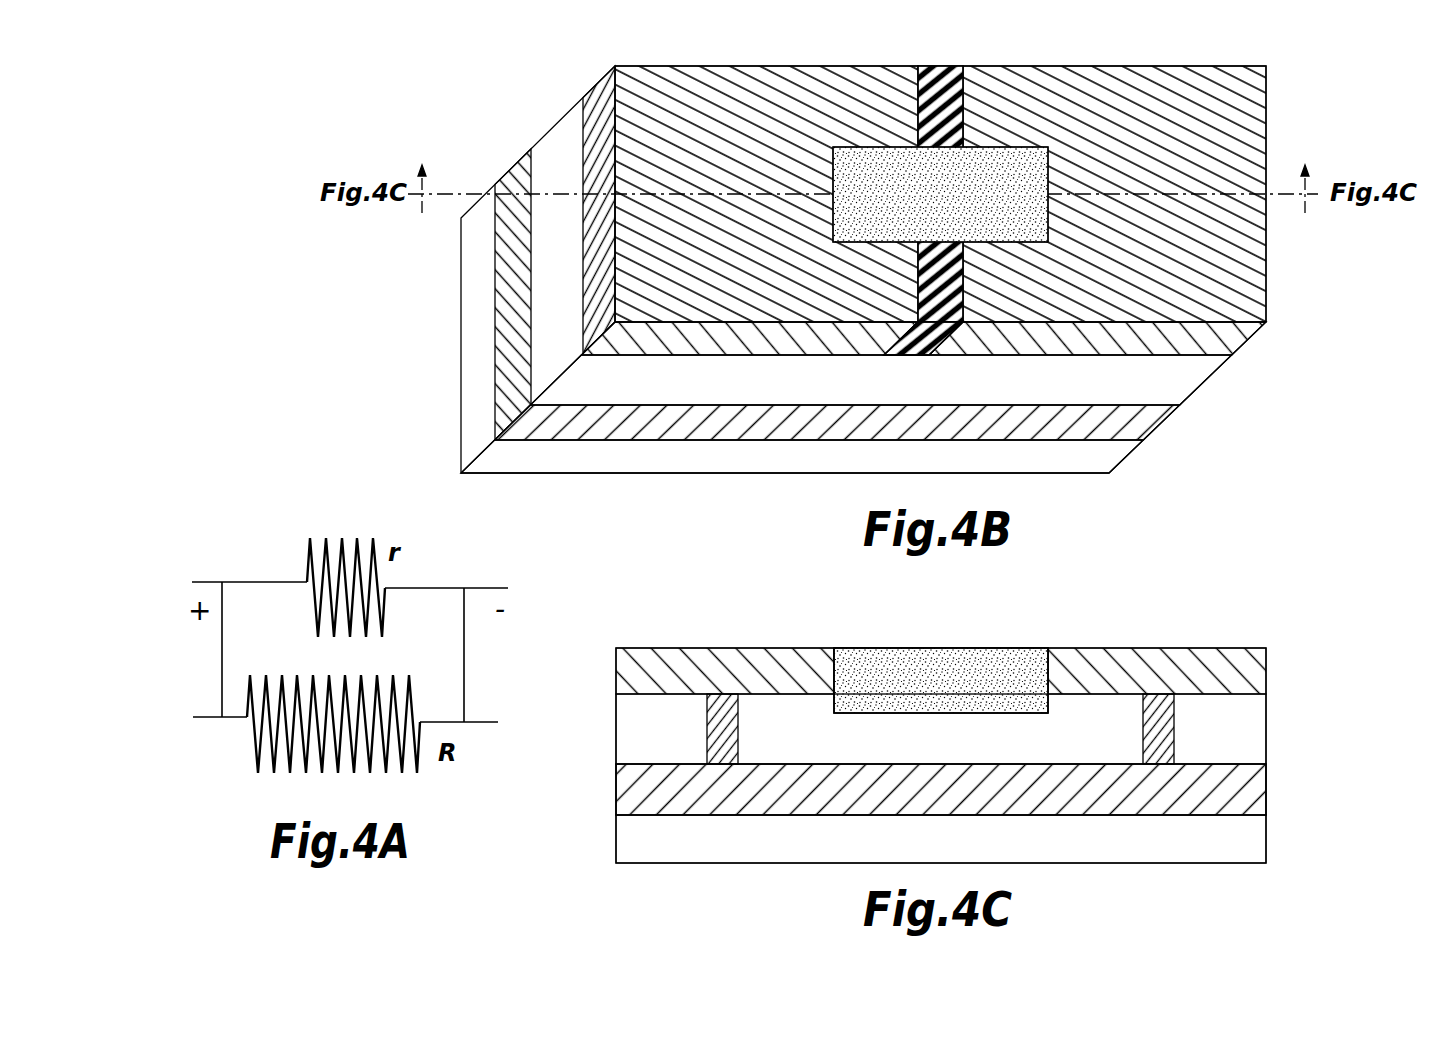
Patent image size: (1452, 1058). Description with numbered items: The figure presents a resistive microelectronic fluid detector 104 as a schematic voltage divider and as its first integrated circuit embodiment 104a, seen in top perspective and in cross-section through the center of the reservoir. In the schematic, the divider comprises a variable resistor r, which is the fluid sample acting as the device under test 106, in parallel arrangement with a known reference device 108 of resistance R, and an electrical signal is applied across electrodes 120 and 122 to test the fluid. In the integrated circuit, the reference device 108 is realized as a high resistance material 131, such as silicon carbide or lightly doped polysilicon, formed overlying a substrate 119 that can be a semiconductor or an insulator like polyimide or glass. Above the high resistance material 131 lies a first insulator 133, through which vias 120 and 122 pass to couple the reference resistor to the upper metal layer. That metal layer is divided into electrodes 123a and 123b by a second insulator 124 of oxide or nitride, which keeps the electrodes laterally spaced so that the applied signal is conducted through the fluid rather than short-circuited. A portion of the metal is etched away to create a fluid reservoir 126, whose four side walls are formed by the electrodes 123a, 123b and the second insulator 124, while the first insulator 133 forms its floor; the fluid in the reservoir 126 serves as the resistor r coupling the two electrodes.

In FIG. 4A, the resistive microelectronic fluid detector 104 is at (277, 525).
In FIG. 4B, the first embodiment 104a is at (492, 82).
In FIG. 4C, the first embodiment 104a is at (1303, 631).
In FIG. 4C, the device under test 106 is at (941, 680).
In FIG. 4A, the device under test 106 is at (385, 613).
In FIG. 4B, the reference device 108 is at (513, 294).
In FIG. 4C, the reference device 108 is at (941, 789).
In FIG. 4A, the reference device 108 is at (255, 745).
In FIG. 4B, the substrate 119 is at (1128, 457).
In FIG. 4C, the substrate 119 is at (1266, 833).
In FIG. 4C, the via 120 is at (715, 730).
In FIG. 4A, the via 120 is at (222, 668).
In FIG. 4C, the via 122 is at (1175, 714).
In FIG. 4A, the via 122 is at (464, 683).
In FIG. 4B, the electrode 123a is at (649, 78).
In FIG. 4C, the electrode 123a is at (645, 660).
In FIG. 4B, the electrode 123b is at (1234, 82).
In FIG. 4C, the electrode 123b is at (1238, 657).
In FIG. 4B, the second insulator 124 is at (938, 76).
In FIG. 4B, the fluid reservoir 126 is at (1013, 160).
In FIG. 4C, the fluid reservoir 126 is at (945, 660).
In FIG. 4B, the high resistance material 131 is at (1165, 422).
In FIG. 4C, the high resistance material 131 is at (1266, 787).
In FIG. 4B, the first insulator 133 is at (1203, 383).
In FIG. 4C, the first insulator 133 is at (1266, 725).